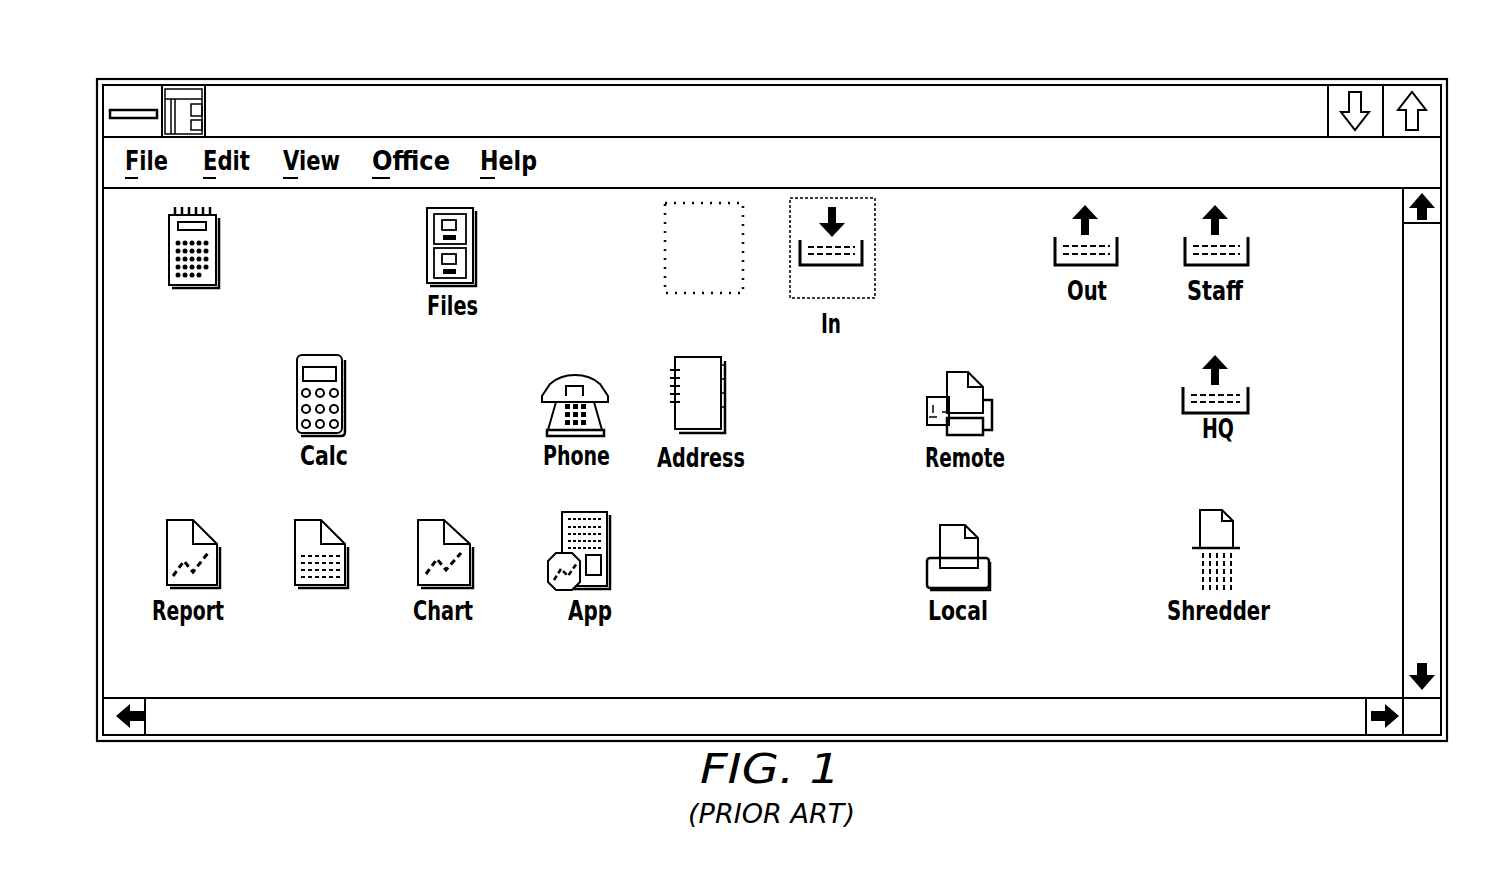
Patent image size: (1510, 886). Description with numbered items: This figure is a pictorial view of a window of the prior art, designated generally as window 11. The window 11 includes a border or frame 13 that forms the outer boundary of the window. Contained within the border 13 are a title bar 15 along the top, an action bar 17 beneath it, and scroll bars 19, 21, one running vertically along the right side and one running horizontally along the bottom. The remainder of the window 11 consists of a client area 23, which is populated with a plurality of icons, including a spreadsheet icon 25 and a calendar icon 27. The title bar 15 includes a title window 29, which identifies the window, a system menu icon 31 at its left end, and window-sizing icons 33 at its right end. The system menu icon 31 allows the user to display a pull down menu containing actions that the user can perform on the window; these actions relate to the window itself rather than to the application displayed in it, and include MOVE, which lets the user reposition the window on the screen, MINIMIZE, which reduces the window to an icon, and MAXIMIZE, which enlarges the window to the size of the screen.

The window 11 is at (1447, 775).
The border or frame 13 is at (1442, 335).
The title bar 15 is at (1123, 93).
The action bar 17 is at (982, 189).
The scroll bar 19 is at (1407, 480).
The scroll bar 21 is at (806, 697).
The client area 23 is at (815, 532).
The spreadsheet icon 25 is at (331, 530).
The calendar icon 27 is at (221, 245).
The title window 29 is at (766, 87).
The system menu icon 31 is at (140, 80).
The window-sizing icons 33 is at (1378, 80).